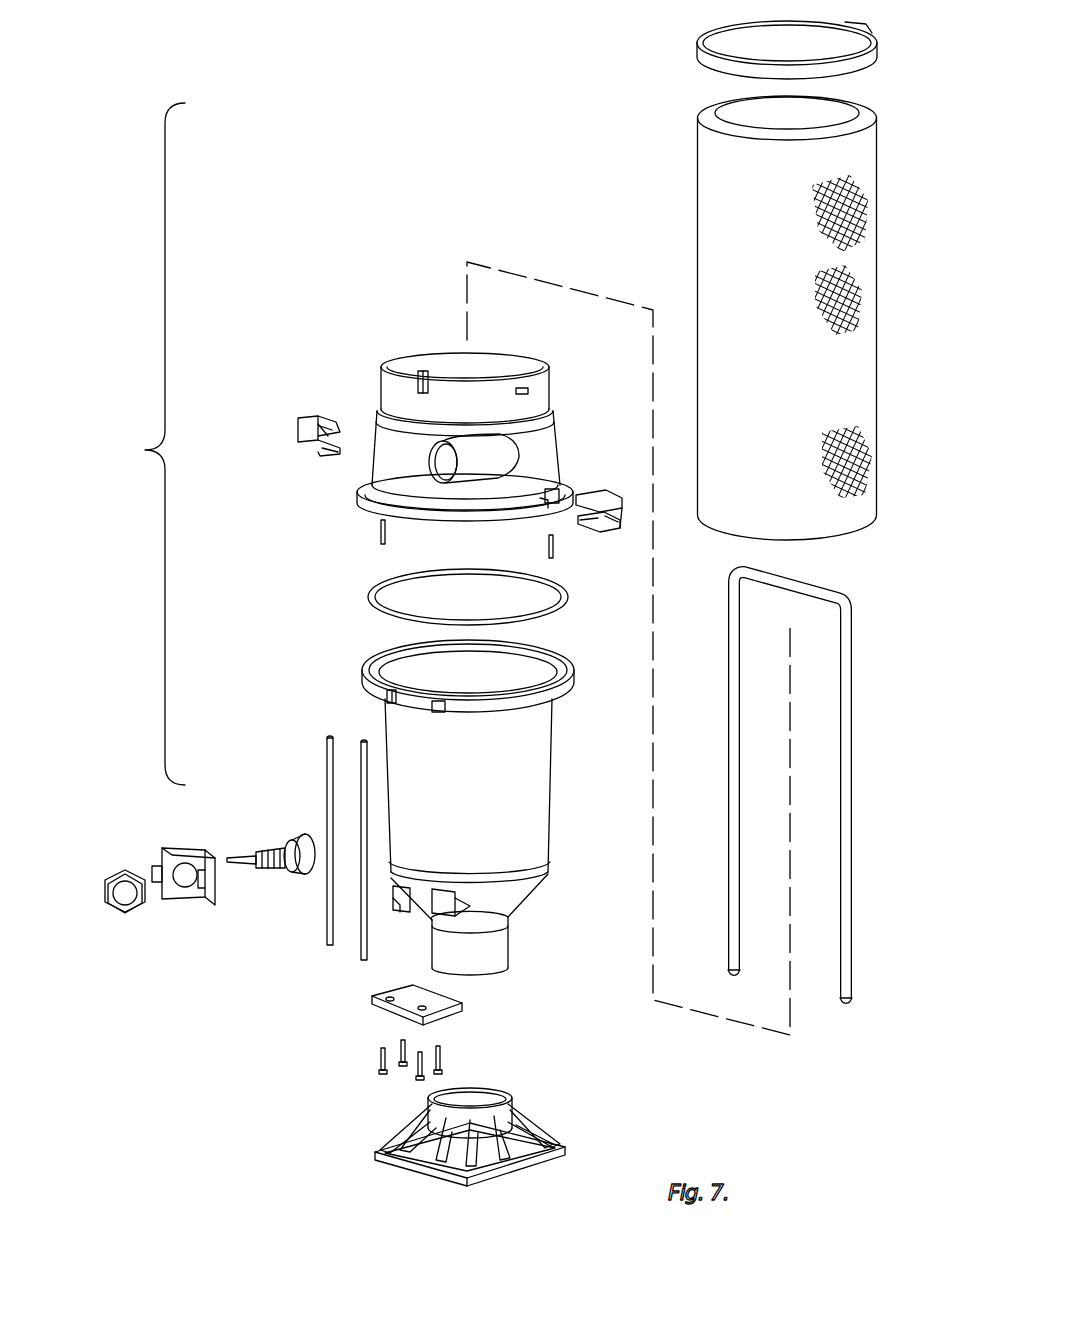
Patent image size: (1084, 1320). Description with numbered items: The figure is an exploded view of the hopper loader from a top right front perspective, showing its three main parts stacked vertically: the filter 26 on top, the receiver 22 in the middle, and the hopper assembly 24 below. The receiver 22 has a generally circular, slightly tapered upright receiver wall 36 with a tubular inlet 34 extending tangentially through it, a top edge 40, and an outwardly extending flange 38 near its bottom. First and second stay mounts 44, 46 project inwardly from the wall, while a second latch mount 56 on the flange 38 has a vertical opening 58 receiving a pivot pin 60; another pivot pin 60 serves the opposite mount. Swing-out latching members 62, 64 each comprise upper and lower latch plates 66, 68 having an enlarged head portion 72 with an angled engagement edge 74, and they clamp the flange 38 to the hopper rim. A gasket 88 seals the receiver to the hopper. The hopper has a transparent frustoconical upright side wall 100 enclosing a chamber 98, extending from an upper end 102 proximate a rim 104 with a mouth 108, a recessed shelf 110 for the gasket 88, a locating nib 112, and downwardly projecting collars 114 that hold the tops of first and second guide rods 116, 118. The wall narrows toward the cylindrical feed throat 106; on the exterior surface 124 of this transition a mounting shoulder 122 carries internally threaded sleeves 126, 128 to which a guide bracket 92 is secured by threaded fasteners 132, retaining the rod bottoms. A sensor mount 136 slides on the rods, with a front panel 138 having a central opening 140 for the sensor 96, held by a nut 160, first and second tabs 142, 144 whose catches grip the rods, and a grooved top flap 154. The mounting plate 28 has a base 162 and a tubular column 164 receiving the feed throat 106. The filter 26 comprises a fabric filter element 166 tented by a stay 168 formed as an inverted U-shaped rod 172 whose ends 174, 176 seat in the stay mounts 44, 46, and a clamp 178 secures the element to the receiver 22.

The receiver 22 is at (466, 433).
The hopper assembly 24 is at (467, 798).
The filter 26 is at (749, 318).
The mounting plate 28 is at (477, 1137).
The tubular inlet 34 is at (472, 467).
The upright receiver wall 36 is at (560, 422).
The flange 38 is at (366, 488).
The top edge 40 is at (450, 363).
The first stay mount 44 is at (425, 372).
The second stay mount 46 is at (524, 390).
The second latch mount 56 is at (548, 502).
The opening 58 is at (562, 482).
The pivot pin 60 is at (380, 538).
The latching member 62 is at (292, 428).
The latching member 64 is at (584, 526).
The upper latch plate 66 is at (605, 524).
The lower latch plate 68 is at (604, 528).
The enlarged head portion 72 is at (312, 446).
The engagement edge 74 is at (328, 452).
The gasket 88 is at (370, 596).
The guide bracket 92 is at (460, 1008).
The sensor 96 is at (288, 866).
The chamber 98 is at (463, 675).
The upright side wall 100 is at (536, 797).
The upper end 102 is at (467, 666).
The rim 104 is at (392, 656).
The feed throat 106 is at (510, 946).
The mouth 108 is at (538, 666).
The recessed shelf 110 is at (573, 671).
The locating nib 112 is at (393, 704).
The collars 114 is at (386, 697).
The first guide rod 116 is at (326, 746).
The second guide rod 118 is at (361, 956).
The mounting shoulder 122 is at (398, 913).
The exterior surface 124 is at (518, 890).
The first internally threaded sleeve 126 is at (399, 887).
The second internally threaded sleeve 128 is at (450, 896).
The threaded fasteners 132 is at (440, 892).
The sensor mount 136 is at (203, 896).
The front panel 138 is at (192, 882).
The central opening 140 is at (185, 886).
The first tab 142 is at (157, 868).
The second tab 144 is at (210, 880).
The top flap 154 is at (208, 858).
The nut 160 is at (124, 914).
The base 162 is at (562, 1148).
The tubular column 164 is at (432, 1101).
The filter element 166 is at (700, 142).
The stay 168 is at (780, 803).
The inverted U-shaped rod 172 is at (728, 706).
The end 174 is at (733, 968).
The end 176 is at (848, 998).
The clamp 178 is at (700, 46).